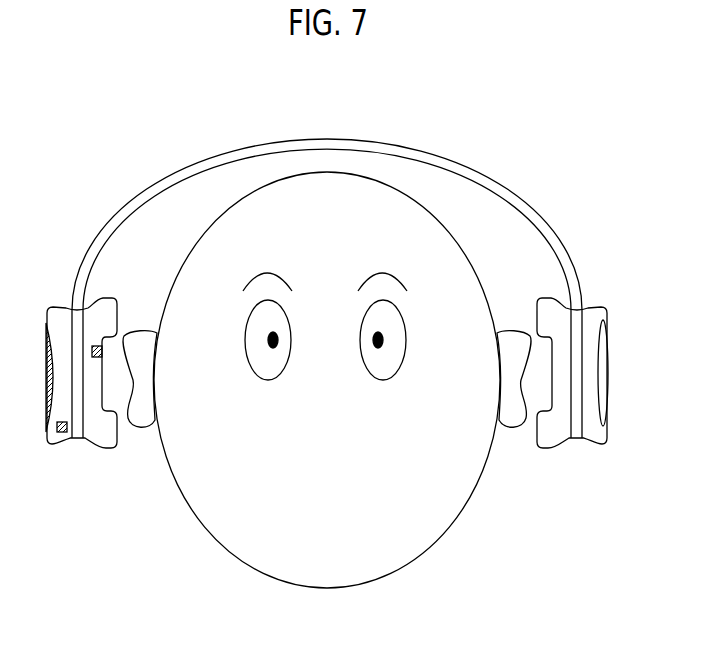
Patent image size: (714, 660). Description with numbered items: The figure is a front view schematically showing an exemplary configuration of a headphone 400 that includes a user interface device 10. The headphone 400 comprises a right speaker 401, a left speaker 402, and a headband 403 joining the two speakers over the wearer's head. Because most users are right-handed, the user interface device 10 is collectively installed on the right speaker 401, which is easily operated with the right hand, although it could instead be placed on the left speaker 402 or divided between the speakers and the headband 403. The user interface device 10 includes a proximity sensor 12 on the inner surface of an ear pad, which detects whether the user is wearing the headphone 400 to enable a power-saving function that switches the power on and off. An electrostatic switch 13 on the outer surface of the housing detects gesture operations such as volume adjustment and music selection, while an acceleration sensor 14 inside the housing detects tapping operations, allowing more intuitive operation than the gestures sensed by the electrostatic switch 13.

The headphone 400 is at (86, 114).
The right speaker 401 is at (58, 307).
The left speaker 402 is at (598, 307).
The headband 403 is at (325, 137).
The user interface device 10 is at (108, 487).
The proximity sensor 12 is at (103, 350).
The electrostatic switch 13 is at (45, 375).
The acceleration sensor 14 is at (61, 433).